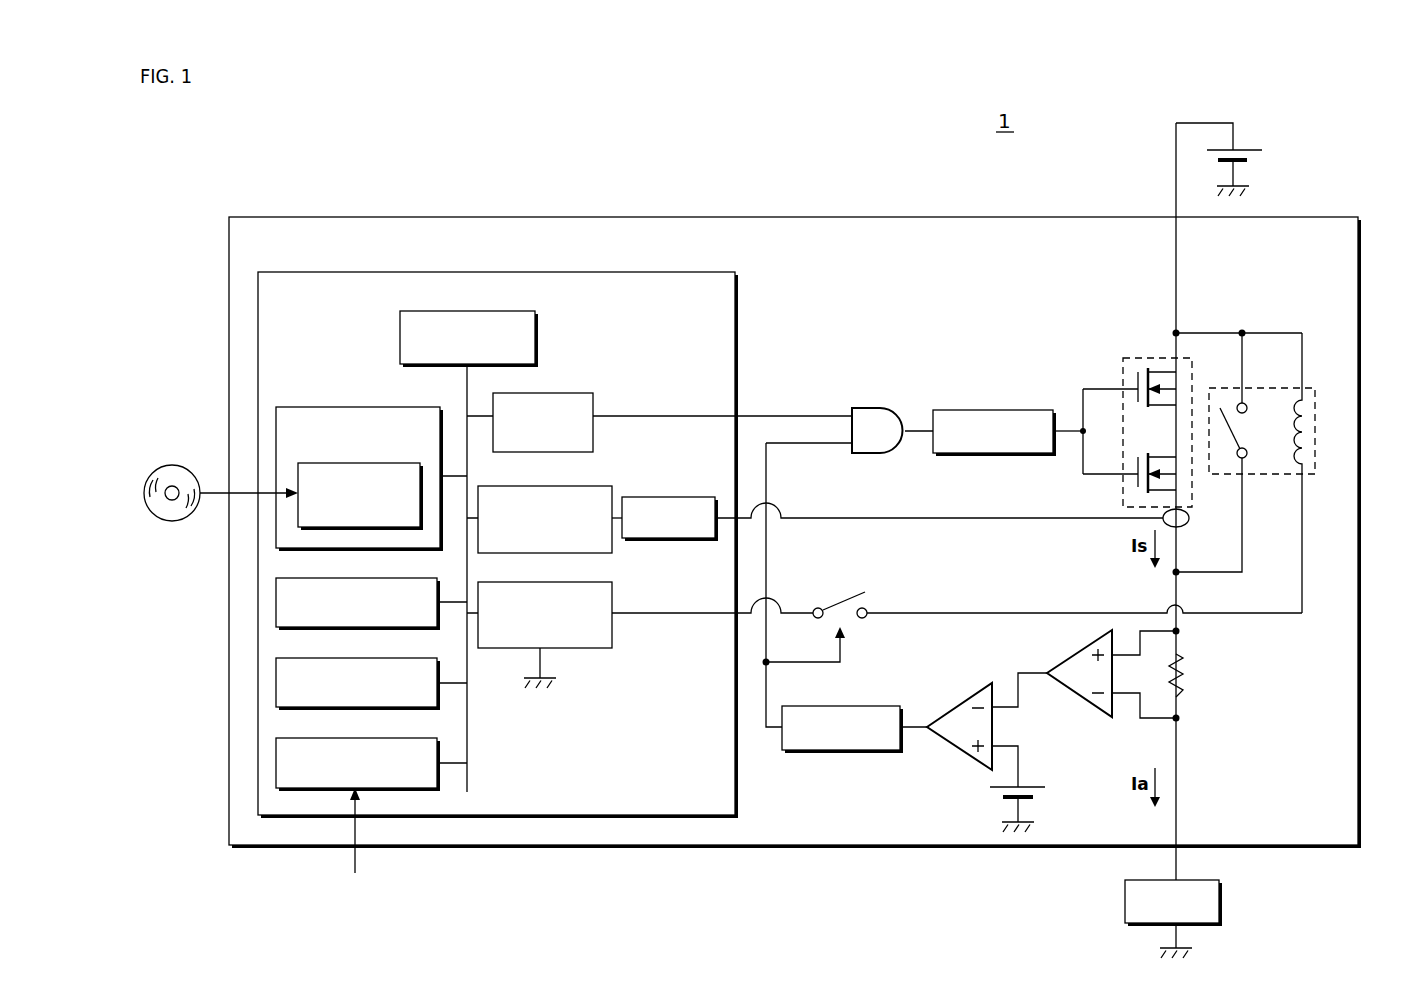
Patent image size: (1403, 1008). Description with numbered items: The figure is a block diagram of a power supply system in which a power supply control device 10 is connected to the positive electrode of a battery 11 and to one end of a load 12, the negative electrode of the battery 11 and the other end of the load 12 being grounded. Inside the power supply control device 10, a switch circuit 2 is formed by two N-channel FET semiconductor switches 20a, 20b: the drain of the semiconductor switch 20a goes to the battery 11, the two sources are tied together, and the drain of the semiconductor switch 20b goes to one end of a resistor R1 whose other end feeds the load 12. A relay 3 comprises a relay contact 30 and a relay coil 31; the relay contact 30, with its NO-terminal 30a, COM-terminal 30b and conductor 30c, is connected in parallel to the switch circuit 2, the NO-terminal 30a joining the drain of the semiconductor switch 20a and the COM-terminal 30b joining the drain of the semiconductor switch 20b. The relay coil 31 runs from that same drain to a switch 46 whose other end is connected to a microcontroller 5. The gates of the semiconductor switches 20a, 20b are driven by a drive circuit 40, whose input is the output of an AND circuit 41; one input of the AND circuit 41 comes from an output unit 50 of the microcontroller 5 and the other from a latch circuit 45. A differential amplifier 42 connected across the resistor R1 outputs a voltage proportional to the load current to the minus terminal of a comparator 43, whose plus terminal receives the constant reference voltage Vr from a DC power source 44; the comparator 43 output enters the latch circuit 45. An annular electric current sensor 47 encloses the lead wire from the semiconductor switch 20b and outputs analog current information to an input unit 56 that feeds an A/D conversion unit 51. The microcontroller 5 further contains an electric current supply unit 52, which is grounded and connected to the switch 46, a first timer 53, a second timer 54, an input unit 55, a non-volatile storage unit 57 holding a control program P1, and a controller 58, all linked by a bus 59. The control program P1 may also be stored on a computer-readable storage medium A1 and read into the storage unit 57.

The power supply control device 10 is at (323, 213).
The battery 11 is at (1268, 154).
The load 12 is at (1222, 896).
The switch circuit 2 is at (1101, 406).
The semiconductor switch 20a is at (1130, 378).
The semiconductor switch 20b is at (1130, 482).
The relay 3 is at (1260, 472).
The relay contact 30 is at (1245, 452).
The NO-terminal 30a is at (1248, 403).
The COM-terminal 30b is at (1248, 458).
The conductor 30c is at (1223, 427).
The relay coil 31 is at (1308, 452).
The microcontroller 5 is at (383, 272).
The drive circuit 40 is at (968, 406).
The AND circuit 41 is at (870, 407).
The differential amplifier 42 is at (1067, 657).
The comparator 43 is at (962, 701).
The DC power source 44 is at (1050, 793).
The latch circuit 45 is at (815, 701).
The switch 46 is at (842, 591).
The electric current sensor 47 is at (1189, 522).
The output unit 50 is at (540, 393).
The A/D conversion unit 51 is at (540, 486).
The electric current supply unit 52 is at (540, 582).
The first timer 53 is at (372, 578).
The second timer 54 is at (372, 658).
The input unit 55 is at (372, 738).
The input unit 56 is at (648, 497).
The storage unit 57 is at (372, 407).
The controller 58 is at (478, 313).
The bus 59 is at (467, 747).
The control program P1 is at (345, 463).
The storage medium A1 is at (172, 465).
The resistor R1 is at (1186, 678).